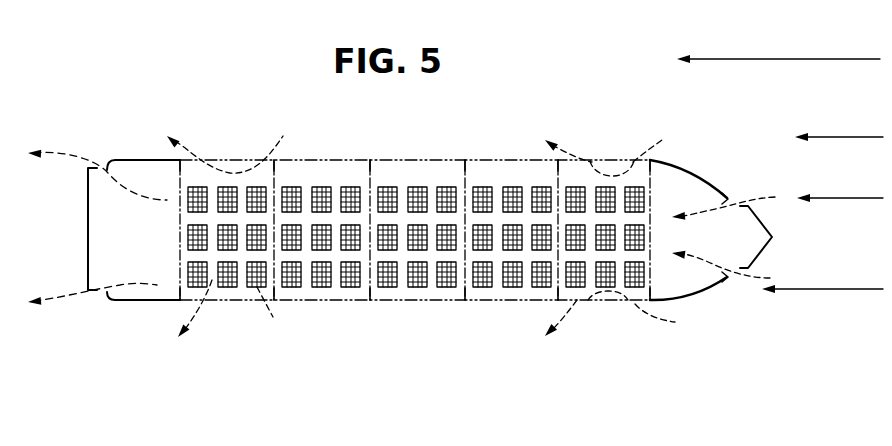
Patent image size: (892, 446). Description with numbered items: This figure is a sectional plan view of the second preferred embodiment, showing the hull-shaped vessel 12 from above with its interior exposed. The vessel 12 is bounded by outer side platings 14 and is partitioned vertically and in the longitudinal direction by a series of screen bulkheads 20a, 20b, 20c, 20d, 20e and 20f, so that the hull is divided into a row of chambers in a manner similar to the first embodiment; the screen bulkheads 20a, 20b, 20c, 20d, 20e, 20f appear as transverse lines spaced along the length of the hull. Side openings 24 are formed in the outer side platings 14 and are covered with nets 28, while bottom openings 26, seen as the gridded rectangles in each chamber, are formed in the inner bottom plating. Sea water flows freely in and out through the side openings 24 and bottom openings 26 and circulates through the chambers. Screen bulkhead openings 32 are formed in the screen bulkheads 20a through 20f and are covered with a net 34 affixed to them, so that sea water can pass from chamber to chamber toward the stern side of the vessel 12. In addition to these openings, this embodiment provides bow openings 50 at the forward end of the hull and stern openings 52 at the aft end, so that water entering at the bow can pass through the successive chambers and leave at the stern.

The hull-shaped vessel 12 is at (690, 172).
The outer side platings 14 is at (522, 160).
The screen bulkhead 20a is at (654, 172).
The screen bulkhead 20b is at (557, 169).
The screen bulkhead 20c is at (464, 169).
The screen bulkhead 20d is at (369, 169).
The screen bulkhead 20e is at (277, 167).
The screen bulkhead 20f is at (178, 168).
The side openings 24 is at (591, 162).
The bottom openings 26 is at (352, 285).
The nets 28 is at (608, 162).
The screen bulkhead openings 32 is at (654, 290).
The net 34 is at (650, 271).
The bow openings 50 is at (733, 197).
The stern openings 52 is at (100, 170).